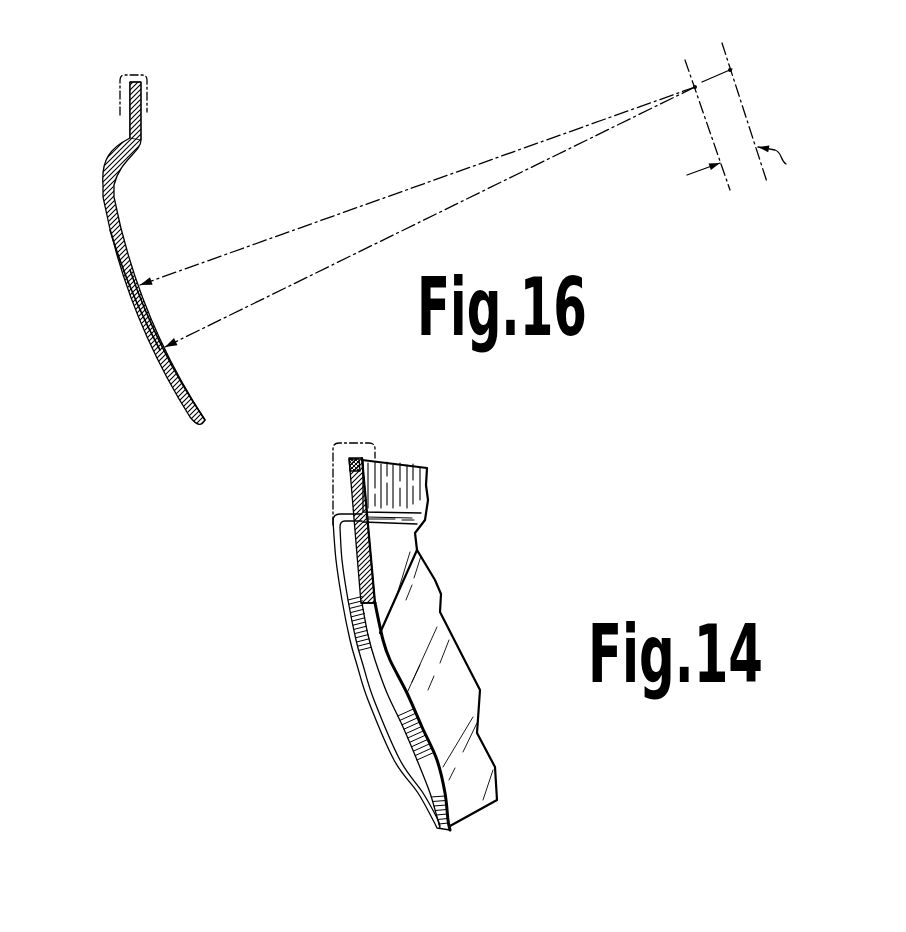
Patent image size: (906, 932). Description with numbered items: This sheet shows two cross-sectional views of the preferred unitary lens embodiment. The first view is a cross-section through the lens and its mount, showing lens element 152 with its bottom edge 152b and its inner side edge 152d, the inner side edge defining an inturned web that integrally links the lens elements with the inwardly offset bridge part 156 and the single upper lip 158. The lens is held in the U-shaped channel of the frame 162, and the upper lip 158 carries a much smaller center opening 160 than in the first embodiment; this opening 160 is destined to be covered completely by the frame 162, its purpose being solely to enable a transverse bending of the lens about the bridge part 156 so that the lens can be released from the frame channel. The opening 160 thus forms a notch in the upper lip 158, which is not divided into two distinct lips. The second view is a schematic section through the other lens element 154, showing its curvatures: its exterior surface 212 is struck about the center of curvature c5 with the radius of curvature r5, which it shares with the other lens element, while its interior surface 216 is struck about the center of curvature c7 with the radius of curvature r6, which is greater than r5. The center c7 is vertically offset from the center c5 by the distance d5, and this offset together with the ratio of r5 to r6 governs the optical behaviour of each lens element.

In FIG. 16, the lens element 154 is at (108, 246).
In FIG. 16, the upper lip 158 is at (138, 92).
In FIG. 14, the upper lip 158 is at (349, 497).
In FIG. 16, the exterior surface 212 is at (137, 313).
In FIG. 16, the interior surface 216 is at (180, 378).
In FIG. 16, the radius of curvature of interior surfaces r6 is at (457, 173).
In FIG. 16, the radius of curvature of exterior surfaces r5 is at (478, 193).
In FIG. 16, the center of curvature of exterior surfaces c5 is at (694, 87).
In FIG. 16, the center of curvature of interior surface c7 is at (731, 69).
In FIG. 16, the vertical offset distance d5 is at (749, 163).
In FIG. 14, the frame 162 is at (363, 440).
In FIG. 14, the center opening 160 is at (349, 462).
In FIG. 14, the bridge part 156 is at (360, 590).
In FIG. 14, the inner side edge 152d is at (353, 652).
In FIG. 14, the lens element 152 is at (397, 717).
In FIG. 14, the bottom edge 152b is at (440, 832).